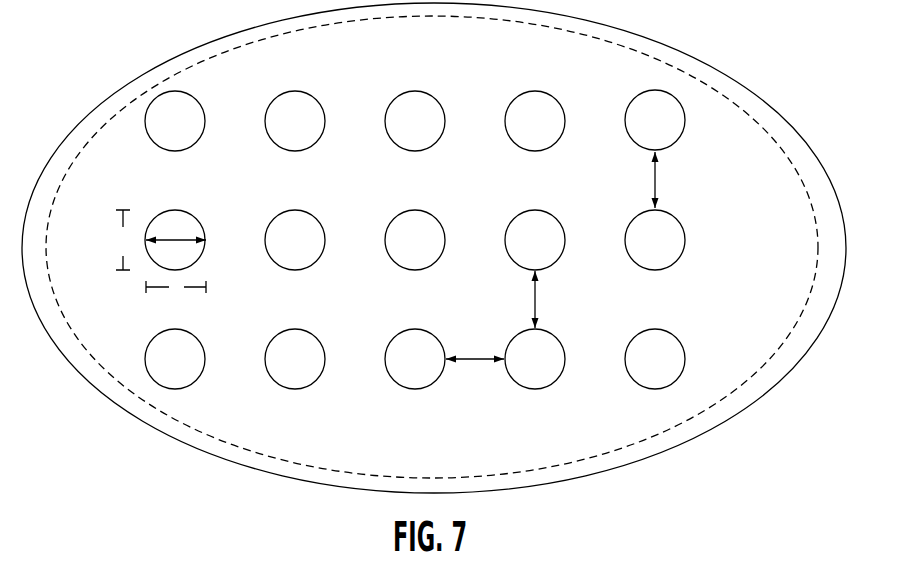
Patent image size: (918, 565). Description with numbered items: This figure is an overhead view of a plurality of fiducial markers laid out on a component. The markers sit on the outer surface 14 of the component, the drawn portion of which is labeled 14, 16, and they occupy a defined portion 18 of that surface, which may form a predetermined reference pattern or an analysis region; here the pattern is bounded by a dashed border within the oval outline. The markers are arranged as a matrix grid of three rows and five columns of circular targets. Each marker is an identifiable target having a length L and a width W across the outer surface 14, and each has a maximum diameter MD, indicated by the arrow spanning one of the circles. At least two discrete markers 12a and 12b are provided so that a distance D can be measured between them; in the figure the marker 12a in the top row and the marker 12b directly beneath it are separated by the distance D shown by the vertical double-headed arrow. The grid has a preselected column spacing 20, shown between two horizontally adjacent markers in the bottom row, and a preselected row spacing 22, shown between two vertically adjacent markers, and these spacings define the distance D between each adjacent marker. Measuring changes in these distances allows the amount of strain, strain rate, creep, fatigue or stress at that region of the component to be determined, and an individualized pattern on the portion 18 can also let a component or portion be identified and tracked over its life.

The outer surface 14 is at (729, 78).
The sheet layer 16 is at (434, 248).
The portion of the outer surface 18 is at (200, 58).
The discrete marker 12a is at (649, 105).
The discrete marker 12b is at (667, 254).
The column spacing 20 is at (480, 362).
The row spacing 22 is at (538, 293).
The width W is at (123, 240).
The length L is at (176, 287).
The maximum diameter MD is at (174, 237).
The distance D is at (665, 180).